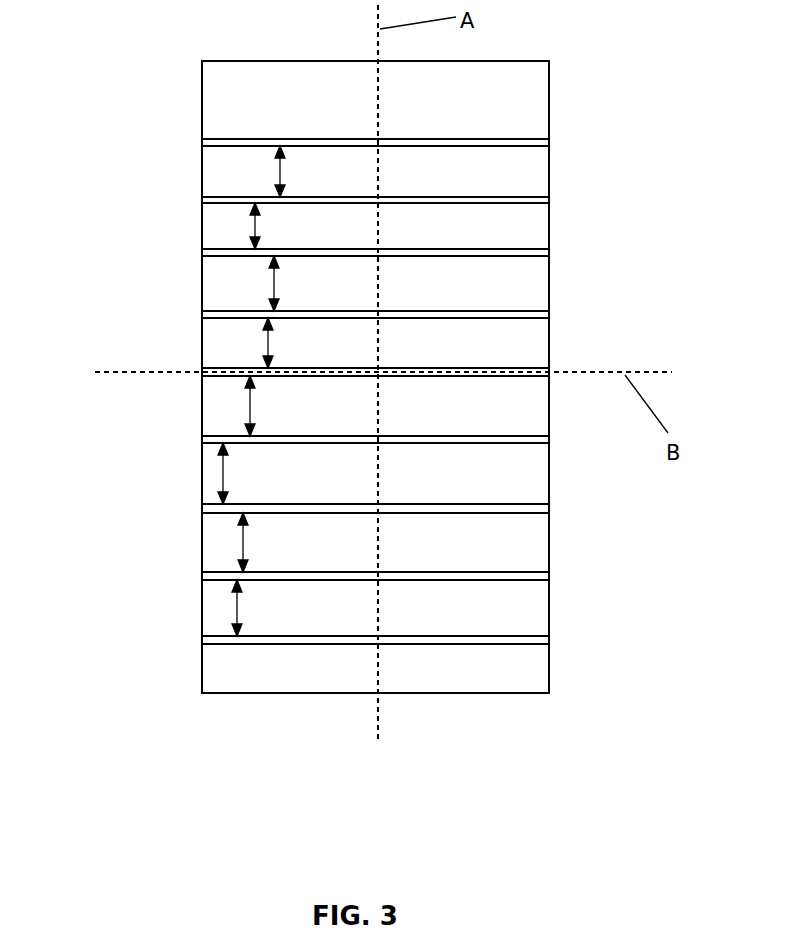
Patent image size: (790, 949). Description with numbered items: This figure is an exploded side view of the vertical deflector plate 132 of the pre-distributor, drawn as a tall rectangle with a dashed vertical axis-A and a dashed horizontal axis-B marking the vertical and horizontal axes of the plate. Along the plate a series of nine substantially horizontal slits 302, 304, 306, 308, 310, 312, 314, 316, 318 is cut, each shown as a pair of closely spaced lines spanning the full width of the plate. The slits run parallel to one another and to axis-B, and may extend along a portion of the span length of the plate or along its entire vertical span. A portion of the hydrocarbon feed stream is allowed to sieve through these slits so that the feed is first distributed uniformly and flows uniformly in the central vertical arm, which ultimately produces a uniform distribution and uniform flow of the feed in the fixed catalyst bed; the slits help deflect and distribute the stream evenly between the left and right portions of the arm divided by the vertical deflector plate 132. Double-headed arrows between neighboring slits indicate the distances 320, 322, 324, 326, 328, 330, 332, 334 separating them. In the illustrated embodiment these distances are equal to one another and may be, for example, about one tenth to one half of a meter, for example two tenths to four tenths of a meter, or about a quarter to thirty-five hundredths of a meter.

The vertical deflector plate 132 is at (201, 90).
The horizontal slit 302 is at (543, 143).
The horizontal slit 304 is at (543, 200).
The horizontal slit 306 is at (540, 250).
The horizontal slit 308 is at (540, 316).
The horizontal slit 310 is at (540, 370).
The horizontal slit 312 is at (532, 439).
The horizontal slit 314 is at (540, 507).
The horizontal slit 316 is at (540, 577).
The horizontal slit 318 is at (540, 640).
The distance between slits 320 is at (280, 171).
The distance between slits 322 is at (255, 222).
The distance between slits 324 is at (274, 283).
The distance between slits 326 is at (268, 343).
The distance between slits 328 is at (250, 409).
The distance between slits 330 is at (223, 465).
The distance between slits 332 is at (243, 536).
The distance between slits 334 is at (237, 603).